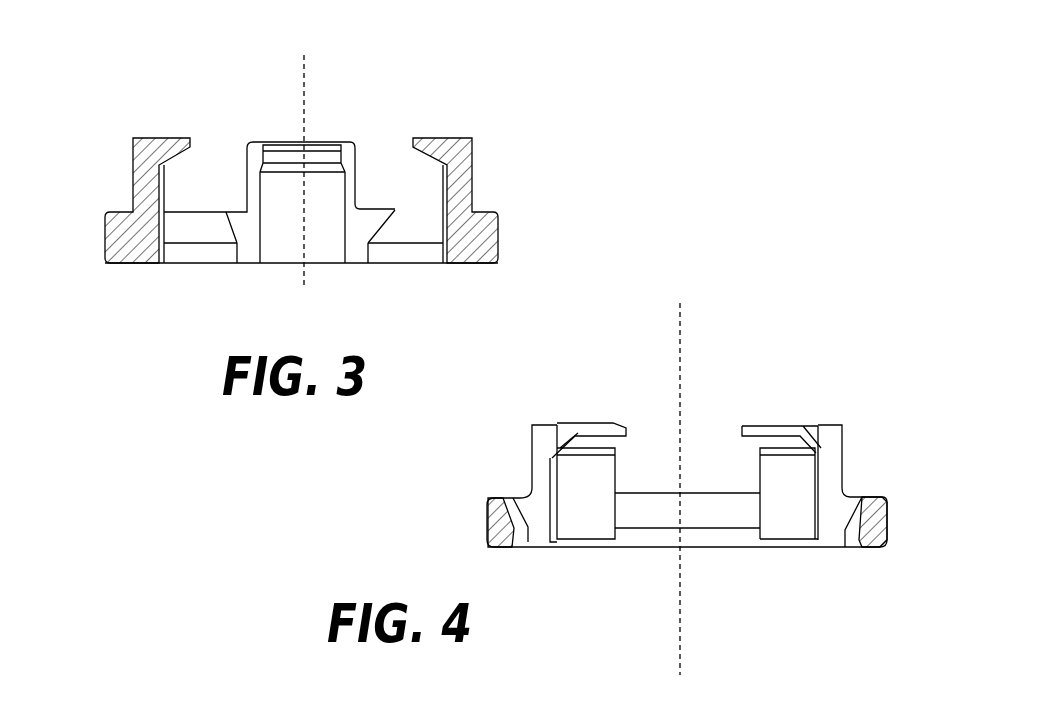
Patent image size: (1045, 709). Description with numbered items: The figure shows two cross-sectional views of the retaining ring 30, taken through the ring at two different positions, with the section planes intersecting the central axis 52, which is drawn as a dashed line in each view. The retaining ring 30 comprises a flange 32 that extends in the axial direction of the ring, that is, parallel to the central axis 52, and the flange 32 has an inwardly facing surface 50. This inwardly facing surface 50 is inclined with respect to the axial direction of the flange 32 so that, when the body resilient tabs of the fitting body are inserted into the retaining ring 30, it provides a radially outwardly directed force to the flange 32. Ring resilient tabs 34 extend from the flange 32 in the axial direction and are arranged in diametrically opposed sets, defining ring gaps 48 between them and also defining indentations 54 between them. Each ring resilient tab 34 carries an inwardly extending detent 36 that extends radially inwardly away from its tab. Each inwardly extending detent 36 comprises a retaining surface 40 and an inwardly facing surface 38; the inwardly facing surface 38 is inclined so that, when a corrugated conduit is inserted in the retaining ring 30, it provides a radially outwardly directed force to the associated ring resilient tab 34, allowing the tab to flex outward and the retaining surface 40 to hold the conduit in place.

In FIG. 3, the retaining ring 30 is at (92, 245).
In FIG. 4, the retaining ring 30 is at (903, 500).
In FIG. 3, the flange 32 is at (392, 208).
In FIG. 4, the flange 32 is at (664, 517).
In FIG. 3, the ring resilient tabs 34 is at (147, 192).
In FIG. 4, the ring resilient tabs 34 is at (537, 463).
In FIG. 3, the inwardly extending detent 36 is at (133, 143).
In FIG. 4, the inwardly extending detent 36 is at (537, 445).
In FIG. 3, the inwardly facing surface 38 is at (193, 142).
In FIG. 4, the inwardly facing surface 38 is at (613, 440).
In FIG. 3, the retaining surface 40 is at (165, 138).
In FIG. 4, the retaining surface 40 is at (603, 423).
In FIG. 3, the ring gaps 48 is at (228, 165).
In FIG. 4, the ring gaps 48 is at (702, 436).
In FIG. 3, the inwardly facing surface 50 is at (193, 232).
In FIG. 4, the inwardly facing surface 50 is at (636, 517).
In FIG. 3, the central axis 52 is at (304, 65).
In FIG. 4, the central axis 52 is at (680, 643).
In FIG. 3, the indentations 54 is at (210, 258).
In FIG. 4, the indentations 54 is at (717, 521).